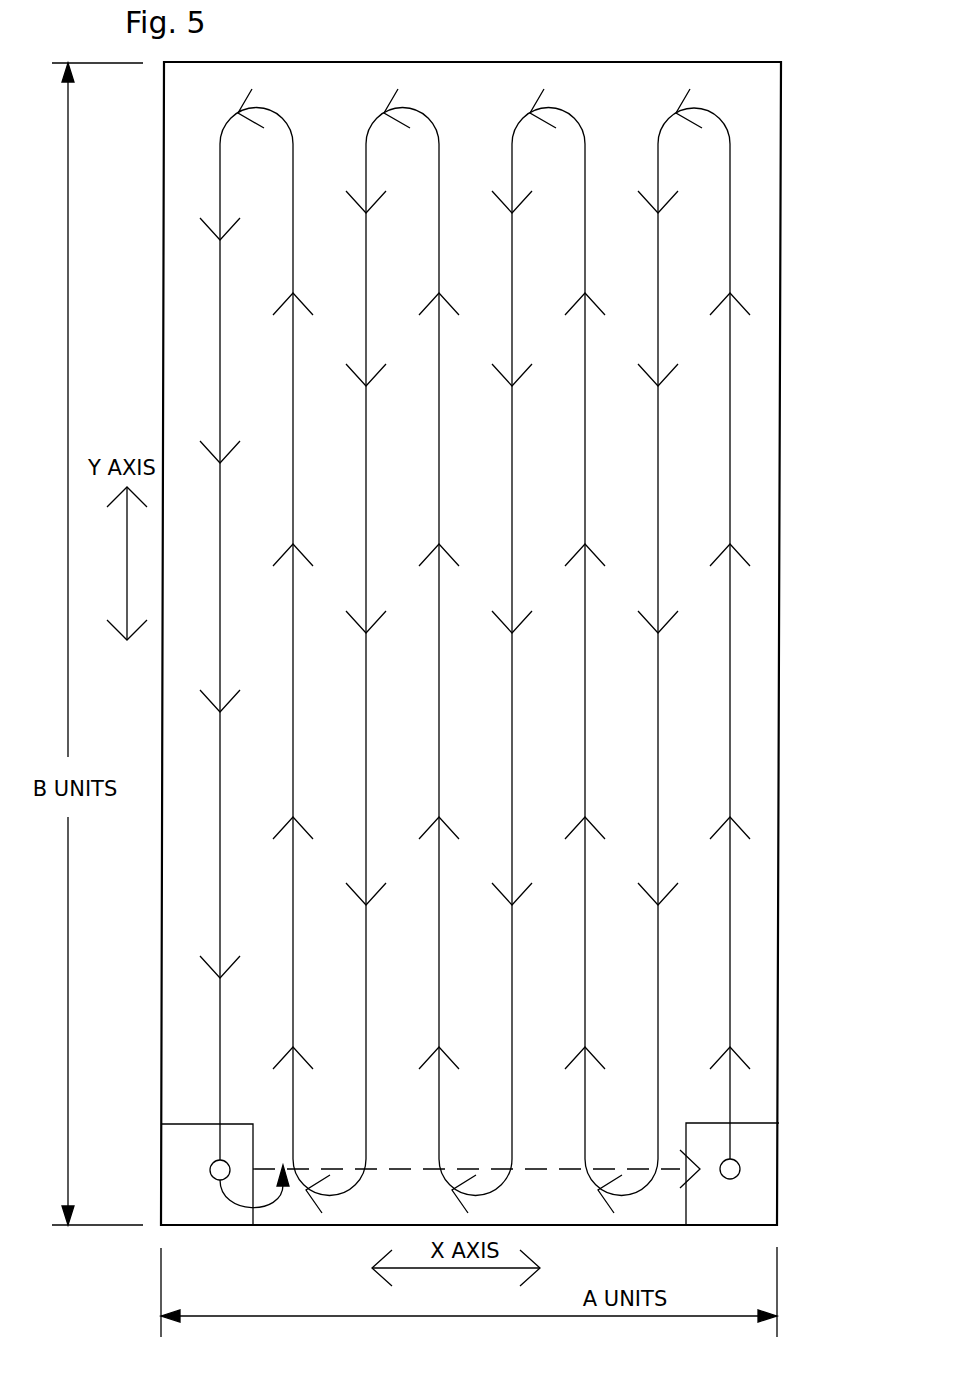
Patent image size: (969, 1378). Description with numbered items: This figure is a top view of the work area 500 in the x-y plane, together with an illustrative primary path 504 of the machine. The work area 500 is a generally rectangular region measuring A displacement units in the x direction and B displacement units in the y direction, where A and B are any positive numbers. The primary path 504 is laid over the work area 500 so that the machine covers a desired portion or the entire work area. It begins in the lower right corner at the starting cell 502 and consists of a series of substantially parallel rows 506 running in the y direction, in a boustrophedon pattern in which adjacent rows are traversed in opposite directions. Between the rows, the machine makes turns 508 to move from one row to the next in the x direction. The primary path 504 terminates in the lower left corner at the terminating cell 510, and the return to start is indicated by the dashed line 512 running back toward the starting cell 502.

The work area 500 is at (673, 60).
The starting cell 502 is at (752, 1157).
The primary path 504 is at (293, 797).
The parallel rows 506 is at (220, 627).
The turns 508 is at (380, 117).
The terminating cell 510 is at (185, 1202).
The dashed line 512 is at (538, 1168).